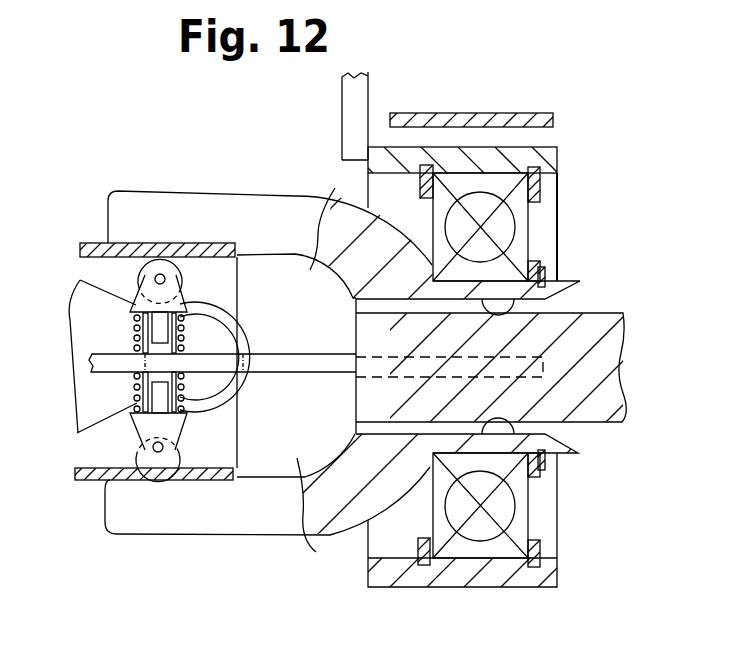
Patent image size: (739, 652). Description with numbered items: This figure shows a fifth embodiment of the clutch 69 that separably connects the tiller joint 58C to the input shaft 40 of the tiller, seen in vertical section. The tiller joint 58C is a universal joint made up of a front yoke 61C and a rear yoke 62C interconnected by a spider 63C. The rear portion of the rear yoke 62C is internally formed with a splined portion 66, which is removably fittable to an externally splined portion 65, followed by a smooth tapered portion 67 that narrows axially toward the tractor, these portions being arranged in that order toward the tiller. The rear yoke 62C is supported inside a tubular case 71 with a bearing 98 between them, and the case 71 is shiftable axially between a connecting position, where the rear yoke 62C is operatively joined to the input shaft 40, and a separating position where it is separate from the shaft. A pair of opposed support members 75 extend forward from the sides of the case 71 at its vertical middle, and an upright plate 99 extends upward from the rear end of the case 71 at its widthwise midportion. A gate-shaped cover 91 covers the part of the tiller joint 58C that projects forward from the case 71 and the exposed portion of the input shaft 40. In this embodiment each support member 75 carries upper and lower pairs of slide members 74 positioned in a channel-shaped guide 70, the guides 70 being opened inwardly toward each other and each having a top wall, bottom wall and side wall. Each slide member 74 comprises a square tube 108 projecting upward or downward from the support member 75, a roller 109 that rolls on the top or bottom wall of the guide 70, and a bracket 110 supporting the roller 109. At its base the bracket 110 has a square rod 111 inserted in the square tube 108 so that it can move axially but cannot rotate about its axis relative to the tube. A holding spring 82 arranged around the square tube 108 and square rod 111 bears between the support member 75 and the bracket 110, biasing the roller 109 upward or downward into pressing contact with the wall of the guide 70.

The tiller joint 58C is at (181, 184).
The rear yoke 62C is at (280, 214).
The spider 63C is at (229, 278).
The front yoke 61C is at (85, 313).
The slide members 74 is at (137, 344).
The roller 109 is at (178, 277).
The bracket 110 is at (175, 309).
The square rod 111 is at (137, 328).
The holding spring 82 is at (133, 369).
The support member 75 is at (318, 354).
The square tube 108 is at (180, 343).
The splined portion 66 is at (356, 427).
The externally splined portion 65 is at (587, 308).
The tapered portion 67 is at (571, 447).
The input shaft 40 is at (604, 388).
The bearing 98 is at (463, 547).
The tubular case 71 is at (500, 583).
The gate-shaped cover 91 is at (482, 127).
The upright plate 99 is at (361, 91).
The guides 70 is at (95, 474).
The clutch 69 is at (202, 492).